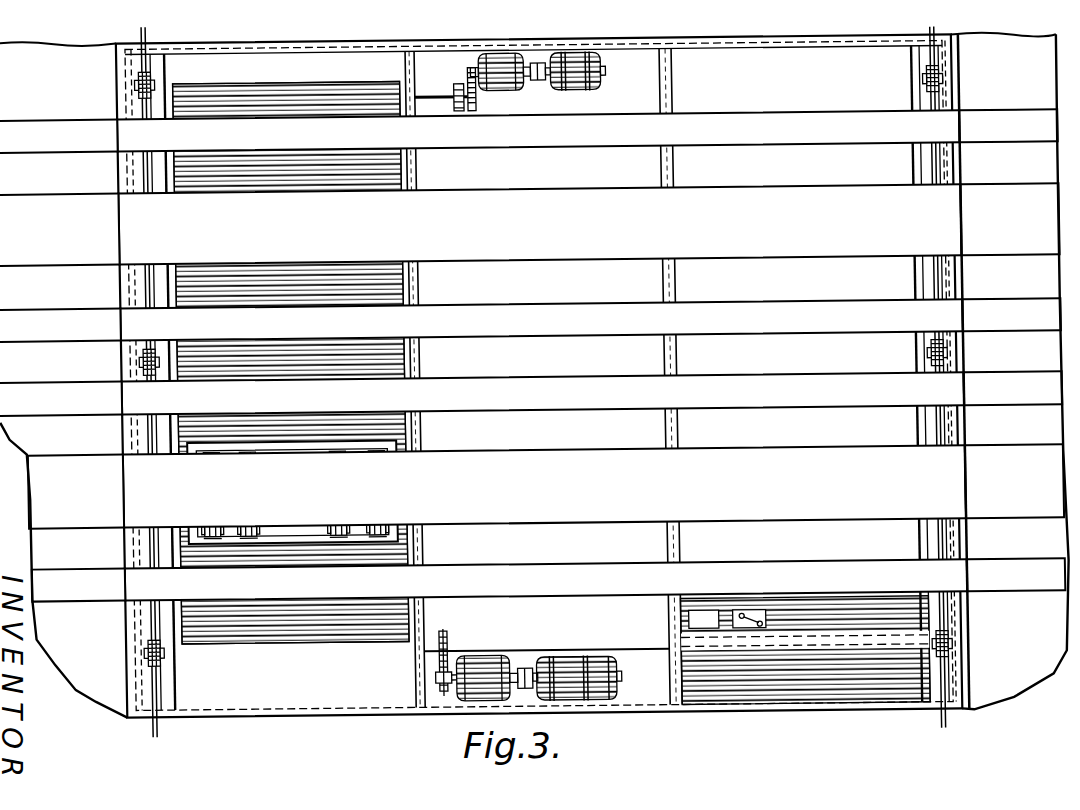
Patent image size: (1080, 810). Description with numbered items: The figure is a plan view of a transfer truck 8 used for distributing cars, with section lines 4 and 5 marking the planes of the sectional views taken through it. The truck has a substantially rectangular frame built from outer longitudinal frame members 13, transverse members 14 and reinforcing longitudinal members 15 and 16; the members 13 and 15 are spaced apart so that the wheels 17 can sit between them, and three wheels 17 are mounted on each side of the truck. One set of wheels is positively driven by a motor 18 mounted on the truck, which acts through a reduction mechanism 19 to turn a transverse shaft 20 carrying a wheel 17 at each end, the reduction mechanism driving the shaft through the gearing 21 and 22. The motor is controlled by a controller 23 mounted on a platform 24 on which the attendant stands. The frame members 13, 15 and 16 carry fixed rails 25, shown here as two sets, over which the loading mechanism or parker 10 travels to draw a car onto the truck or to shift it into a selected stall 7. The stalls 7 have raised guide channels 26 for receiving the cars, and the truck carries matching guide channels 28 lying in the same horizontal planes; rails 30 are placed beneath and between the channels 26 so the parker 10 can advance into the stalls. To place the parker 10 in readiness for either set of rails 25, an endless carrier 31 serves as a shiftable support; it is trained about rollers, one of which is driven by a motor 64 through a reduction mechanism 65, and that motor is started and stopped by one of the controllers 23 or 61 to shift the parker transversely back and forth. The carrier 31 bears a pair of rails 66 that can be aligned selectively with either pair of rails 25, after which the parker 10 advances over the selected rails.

The section line 4- 4 is at (47, 767).
The section line 5- 5 is at (113, 25).
The stall 7 is at (535, 375).
The transfer truck 8 is at (833, 46).
The parker 10 is at (399, 486).
The outer longitudinal frame member 13 is at (126, 90).
The transverse member 14 is at (287, 51).
The reinforcing longitudinal member 15 is at (162, 72).
The reinforcing longitudinal member 16 is at (411, 66).
The wheel 17 is at (140, 353).
The motor 18 is at (600, 671).
The reduction mechanism 19 is at (481, 660).
The transverse shaft 20 is at (541, 654).
The gearing 21 is at (445, 693).
The gearing 22 is at (444, 633).
The controller 23 is at (684, 614).
The platform 24 is at (700, 682).
The rail 25 is at (140, 263).
The guide channel 26 is at (15, 108).
The guide channel 28 is at (728, 127).
The rail 30 is at (1028, 445).
The endless carrier 31 is at (385, 228).
The controller 61 is at (748, 612).
The motor 64 is at (573, 90).
The reduction mechanism 65 is at (500, 92).
The rail 66 is at (403, 449).